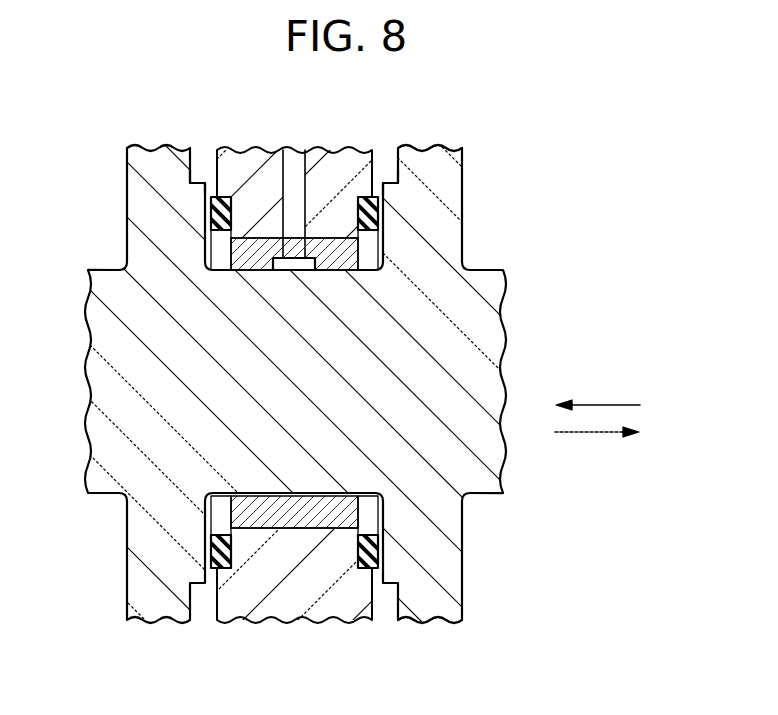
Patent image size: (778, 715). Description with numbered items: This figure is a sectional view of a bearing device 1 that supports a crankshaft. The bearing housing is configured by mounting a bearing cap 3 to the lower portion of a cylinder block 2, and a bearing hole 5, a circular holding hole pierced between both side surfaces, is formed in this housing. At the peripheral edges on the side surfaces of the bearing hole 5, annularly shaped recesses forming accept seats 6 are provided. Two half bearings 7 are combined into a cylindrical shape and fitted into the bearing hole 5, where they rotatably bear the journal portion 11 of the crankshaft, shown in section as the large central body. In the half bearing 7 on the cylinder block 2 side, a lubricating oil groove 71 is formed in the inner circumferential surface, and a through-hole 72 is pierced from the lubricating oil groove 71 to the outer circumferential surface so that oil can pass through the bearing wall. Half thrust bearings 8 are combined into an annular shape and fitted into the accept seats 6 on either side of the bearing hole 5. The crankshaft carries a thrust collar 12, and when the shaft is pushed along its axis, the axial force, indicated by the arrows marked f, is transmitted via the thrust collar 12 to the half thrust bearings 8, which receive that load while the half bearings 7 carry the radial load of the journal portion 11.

The bearing device 1 is at (526, 176).
The cylinder block 2 is at (248, 155).
The bearing cap 3 is at (283, 619).
The bearing hole 5 is at (247, 241).
The accept seat 6 is at (379, 209).
The half bearing 7 is at (379, 248).
The lubricating oil groove 71 is at (293, 271).
The through-hole 72 is at (295, 247).
The half thrust bearing 8 is at (221, 271).
The journal portion 11 is at (240, 415).
The thrust collar 12 is at (193, 182).